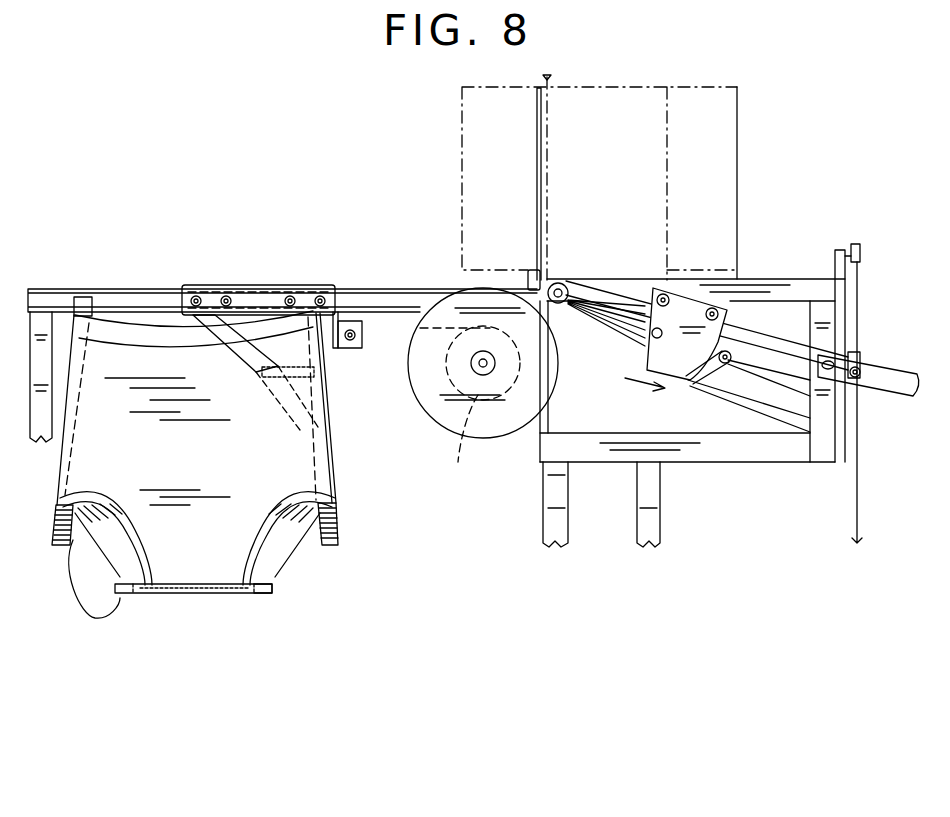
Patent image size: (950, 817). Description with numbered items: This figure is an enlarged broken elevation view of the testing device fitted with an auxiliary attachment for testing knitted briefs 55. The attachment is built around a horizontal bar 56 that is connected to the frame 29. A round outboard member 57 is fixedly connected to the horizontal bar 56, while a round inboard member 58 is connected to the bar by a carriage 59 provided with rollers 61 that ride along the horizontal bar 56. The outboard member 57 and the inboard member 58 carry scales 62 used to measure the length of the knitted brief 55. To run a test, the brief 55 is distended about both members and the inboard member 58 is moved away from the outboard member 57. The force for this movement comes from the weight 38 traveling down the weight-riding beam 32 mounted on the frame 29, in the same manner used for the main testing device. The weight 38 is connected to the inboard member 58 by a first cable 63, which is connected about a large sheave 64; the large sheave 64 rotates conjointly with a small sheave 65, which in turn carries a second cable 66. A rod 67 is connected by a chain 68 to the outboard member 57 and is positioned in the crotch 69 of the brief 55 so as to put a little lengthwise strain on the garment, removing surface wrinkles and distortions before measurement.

The frame 29 is at (762, 452).
The weight-riding beam 32 is at (788, 355).
The weight 38 is at (683, 378).
The knitted brief 55 is at (285, 562).
The horizontal bar 56 is at (363, 289).
The round outboard member 57 is at (62, 547).
The round inboard member 58 is at (338, 547).
The carriage 59 is at (256, 260).
The rollers 61 is at (262, 298).
The scales 62 is at (65, 512).
The first cable 63 is at (532, 282).
The large sheave 64 is at (428, 418).
The small sheave 65 is at (459, 442).
The second cable 66 is at (380, 330).
The rod 67 is at (264, 590).
The chain 68 is at (82, 615).
The crotch 69 is at (180, 594).